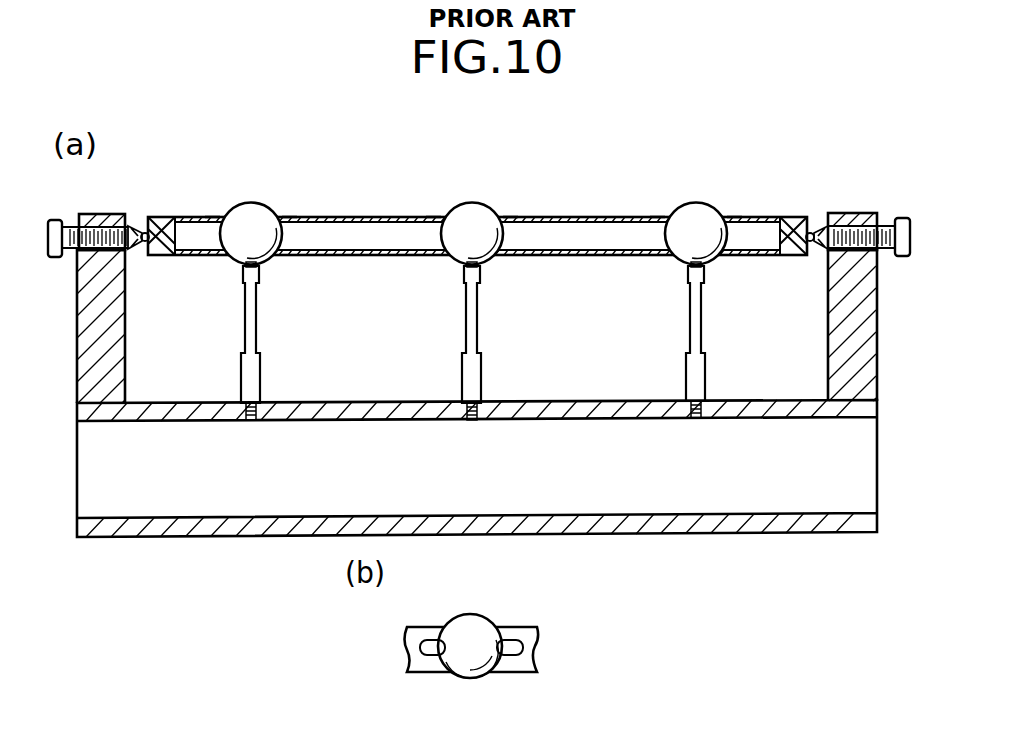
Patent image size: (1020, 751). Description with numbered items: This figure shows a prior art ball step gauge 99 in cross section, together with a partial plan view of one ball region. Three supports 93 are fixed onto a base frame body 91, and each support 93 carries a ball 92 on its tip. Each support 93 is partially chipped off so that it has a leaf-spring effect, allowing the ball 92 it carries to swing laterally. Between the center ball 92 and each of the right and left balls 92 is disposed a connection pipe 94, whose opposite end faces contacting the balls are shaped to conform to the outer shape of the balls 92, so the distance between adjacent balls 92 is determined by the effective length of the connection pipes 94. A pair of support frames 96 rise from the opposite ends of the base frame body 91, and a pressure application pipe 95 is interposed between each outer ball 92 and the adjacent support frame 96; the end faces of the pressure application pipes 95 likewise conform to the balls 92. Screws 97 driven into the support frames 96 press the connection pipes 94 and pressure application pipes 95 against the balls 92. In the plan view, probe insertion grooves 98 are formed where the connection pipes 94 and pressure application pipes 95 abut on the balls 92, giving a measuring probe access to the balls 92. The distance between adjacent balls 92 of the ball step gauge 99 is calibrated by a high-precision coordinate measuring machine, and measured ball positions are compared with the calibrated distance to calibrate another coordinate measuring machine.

The base frame body 91 is at (484, 518).
The ball 92 is at (251, 226).
The support 93 is at (254, 371).
The connection pipe 94 is at (361, 216).
The pressure application pipe 95 is at (178, 217).
The support frame 96 is at (113, 325).
The screw 97 is at (112, 214).
The probe insertion groove 98 is at (217, 219).
The ball step gauge 99 is at (537, 201).